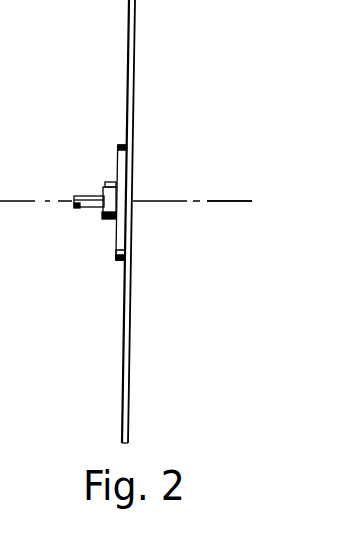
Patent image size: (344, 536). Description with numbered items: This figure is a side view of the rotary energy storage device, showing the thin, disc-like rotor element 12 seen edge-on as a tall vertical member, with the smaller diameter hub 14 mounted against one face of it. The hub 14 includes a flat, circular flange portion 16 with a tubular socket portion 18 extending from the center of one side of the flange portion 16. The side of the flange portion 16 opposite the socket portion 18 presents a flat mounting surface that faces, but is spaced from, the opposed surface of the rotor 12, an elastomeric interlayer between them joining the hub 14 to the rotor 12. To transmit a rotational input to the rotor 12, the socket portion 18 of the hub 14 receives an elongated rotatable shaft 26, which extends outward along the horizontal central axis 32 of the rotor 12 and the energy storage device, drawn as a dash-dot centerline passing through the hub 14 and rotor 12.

The rotor element 12 is at (134, 78).
The hub 14 is at (113, 228).
The flange portion 16 is at (114, 246).
The tubular socket portion 18 is at (110, 187).
The shaft 26 is at (81, 197).
The central axis 32 is at (220, 201).